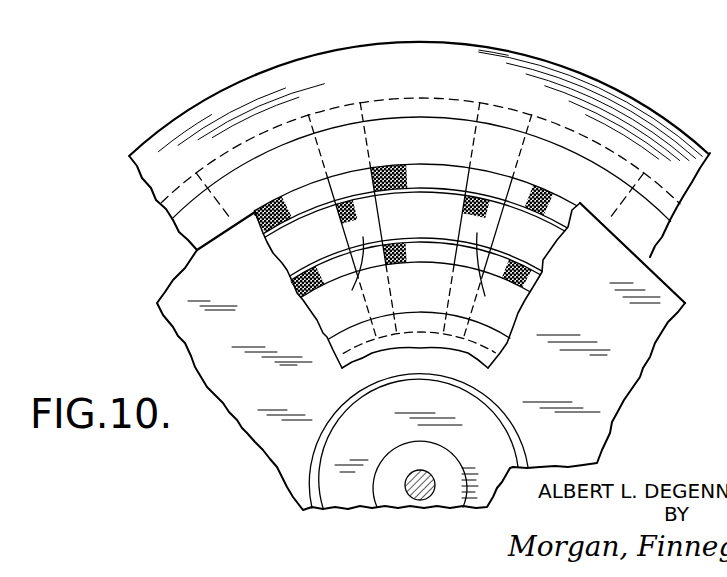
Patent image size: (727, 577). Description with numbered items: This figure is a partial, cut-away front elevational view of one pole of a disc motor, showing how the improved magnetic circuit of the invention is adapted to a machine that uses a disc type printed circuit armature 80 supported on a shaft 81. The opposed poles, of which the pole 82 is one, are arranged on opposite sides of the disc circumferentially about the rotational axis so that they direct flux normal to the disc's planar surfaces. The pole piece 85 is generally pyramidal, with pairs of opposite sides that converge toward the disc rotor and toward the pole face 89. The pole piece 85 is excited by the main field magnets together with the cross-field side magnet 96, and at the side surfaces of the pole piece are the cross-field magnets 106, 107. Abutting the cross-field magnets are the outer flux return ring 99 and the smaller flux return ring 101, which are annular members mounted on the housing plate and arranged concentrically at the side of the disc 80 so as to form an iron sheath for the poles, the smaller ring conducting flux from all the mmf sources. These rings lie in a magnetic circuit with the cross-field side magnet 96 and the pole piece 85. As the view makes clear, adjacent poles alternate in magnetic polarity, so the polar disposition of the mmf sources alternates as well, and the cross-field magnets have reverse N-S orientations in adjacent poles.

The disc type printed circuit armature 80 is at (637, 377).
The shaft 81 is at (423, 500).
The pole 82 is at (588, 69).
The pole piece 85 is at (444, 207).
The pole face 89 is at (397, 217).
The cross-field side magnet 96 is at (287, 205).
The outer flux return ring 99 is at (385, 127).
The smaller flux return ring 101 is at (422, 300).
The cross-field magnet 106 is at (352, 290).
The cross-field magnet 107 is at (502, 275).